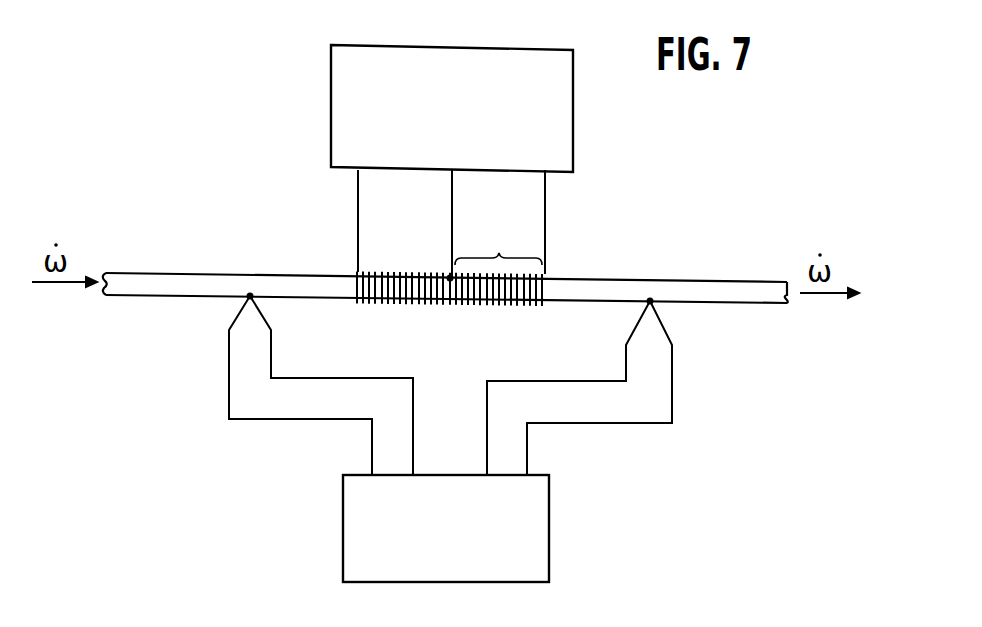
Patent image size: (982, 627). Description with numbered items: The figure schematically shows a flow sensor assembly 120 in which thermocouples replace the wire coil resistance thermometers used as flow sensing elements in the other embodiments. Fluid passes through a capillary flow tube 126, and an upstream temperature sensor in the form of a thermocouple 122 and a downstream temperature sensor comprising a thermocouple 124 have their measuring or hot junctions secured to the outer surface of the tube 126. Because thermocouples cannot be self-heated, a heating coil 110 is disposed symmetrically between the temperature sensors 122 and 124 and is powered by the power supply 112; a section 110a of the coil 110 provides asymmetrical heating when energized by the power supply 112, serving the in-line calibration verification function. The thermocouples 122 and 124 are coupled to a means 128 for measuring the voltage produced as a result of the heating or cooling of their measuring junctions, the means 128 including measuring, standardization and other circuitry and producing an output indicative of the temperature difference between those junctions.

The flow sensor assembly 120 is at (228, 112).
The power supply 112 is at (331, 153).
The capillary flow tube 126 is at (273, 286).
The heating coil 110 is at (390, 304).
The section of the coil 110a is at (498, 245).
The thermocouple 122 is at (212, 342).
The thermocouple 124 is at (688, 352).
The means for measuring the voltage 128 is at (551, 543).